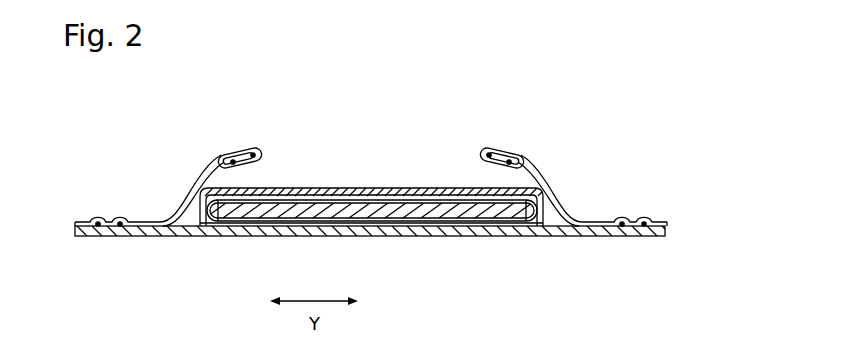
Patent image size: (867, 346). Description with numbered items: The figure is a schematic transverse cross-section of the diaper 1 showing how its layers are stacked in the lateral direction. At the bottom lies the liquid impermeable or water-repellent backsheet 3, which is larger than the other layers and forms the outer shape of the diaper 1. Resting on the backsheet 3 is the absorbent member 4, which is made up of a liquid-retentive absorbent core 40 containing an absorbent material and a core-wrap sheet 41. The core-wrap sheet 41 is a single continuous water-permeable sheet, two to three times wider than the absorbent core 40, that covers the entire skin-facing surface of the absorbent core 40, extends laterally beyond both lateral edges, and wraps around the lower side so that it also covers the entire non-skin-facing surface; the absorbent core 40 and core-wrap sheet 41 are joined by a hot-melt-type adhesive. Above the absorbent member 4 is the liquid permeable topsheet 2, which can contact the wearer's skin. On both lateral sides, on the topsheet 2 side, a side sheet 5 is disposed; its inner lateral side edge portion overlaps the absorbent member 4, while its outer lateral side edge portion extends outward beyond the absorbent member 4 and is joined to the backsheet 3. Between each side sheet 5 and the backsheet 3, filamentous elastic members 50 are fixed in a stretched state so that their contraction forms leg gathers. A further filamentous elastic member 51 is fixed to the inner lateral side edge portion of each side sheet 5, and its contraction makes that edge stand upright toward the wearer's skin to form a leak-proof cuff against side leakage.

The diaper 1 is at (571, 112).
The topsheet 2 is at (293, 188).
The backsheet 3 is at (208, 237).
The absorbent member 4 is at (481, 282).
The absorbent core 40 is at (412, 217).
The core-wrap sheet 41 is at (453, 222).
The side sheet 5 is at (203, 178).
The elastic members 50 is at (119, 229).
The elastic member 51 is at (252, 153).